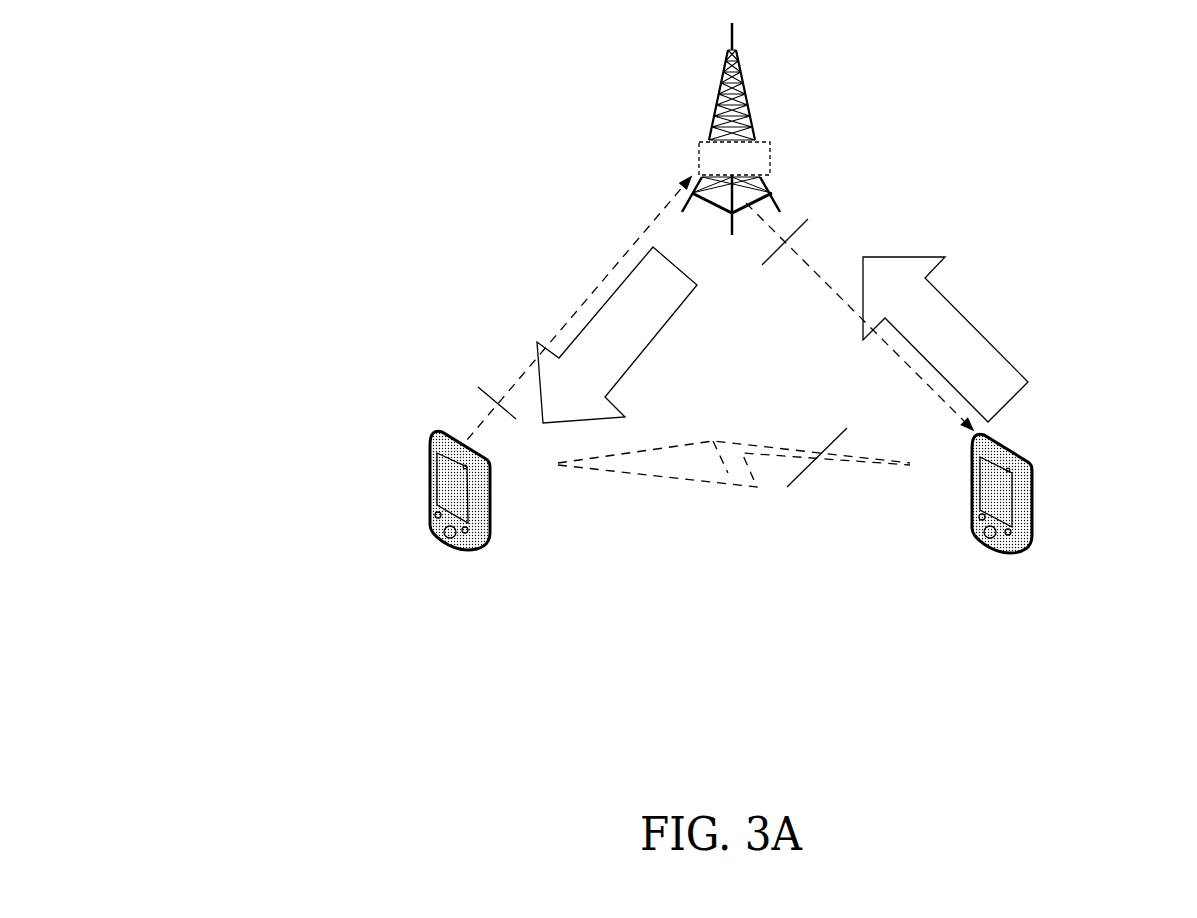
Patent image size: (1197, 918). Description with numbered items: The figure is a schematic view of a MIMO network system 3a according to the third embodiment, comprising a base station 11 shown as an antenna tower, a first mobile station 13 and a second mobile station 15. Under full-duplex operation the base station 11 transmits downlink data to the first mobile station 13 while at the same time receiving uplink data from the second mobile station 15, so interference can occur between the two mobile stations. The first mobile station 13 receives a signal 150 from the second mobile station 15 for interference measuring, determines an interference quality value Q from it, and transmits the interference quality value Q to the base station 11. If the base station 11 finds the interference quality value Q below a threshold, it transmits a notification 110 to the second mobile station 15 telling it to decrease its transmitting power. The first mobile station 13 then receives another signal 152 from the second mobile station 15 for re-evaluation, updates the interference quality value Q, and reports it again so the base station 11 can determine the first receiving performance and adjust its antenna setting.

The MIMO network system 3a is at (335, 112).
The base station 11 is at (705, 132).
The first mobile station 13 is at (428, 472).
The second mobile station 15 is at (1032, 498).
The interference quality value Q is at (497, 403).
The notification 110 is at (782, 240).
The signal 150 is at (735, 506).
The another signal 152 is at (815, 458).